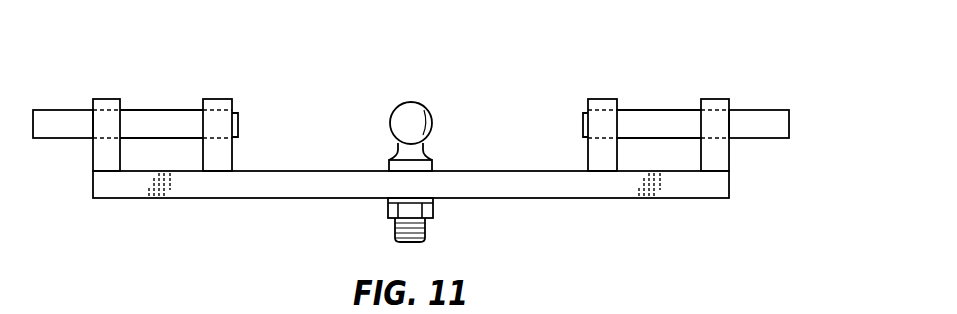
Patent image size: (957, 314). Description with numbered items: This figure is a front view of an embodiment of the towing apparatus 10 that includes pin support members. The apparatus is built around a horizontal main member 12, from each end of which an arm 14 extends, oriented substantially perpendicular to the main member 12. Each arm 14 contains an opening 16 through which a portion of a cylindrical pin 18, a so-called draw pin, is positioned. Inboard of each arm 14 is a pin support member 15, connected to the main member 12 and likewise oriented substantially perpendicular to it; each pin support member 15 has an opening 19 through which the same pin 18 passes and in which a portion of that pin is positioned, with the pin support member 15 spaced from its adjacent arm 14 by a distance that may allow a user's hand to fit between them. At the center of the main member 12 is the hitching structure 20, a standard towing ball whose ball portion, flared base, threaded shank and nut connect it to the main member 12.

The towing apparatus 10 is at (662, 48).
The main member 12 is at (505, 185).
The arm 14 is at (103, 157).
The pin support member 15 is at (222, 158).
The opening 16 is at (110, 110).
The pin 18 is at (55, 110).
The opening 19 is at (222, 110).
The hitching structure 20 is at (438, 84).